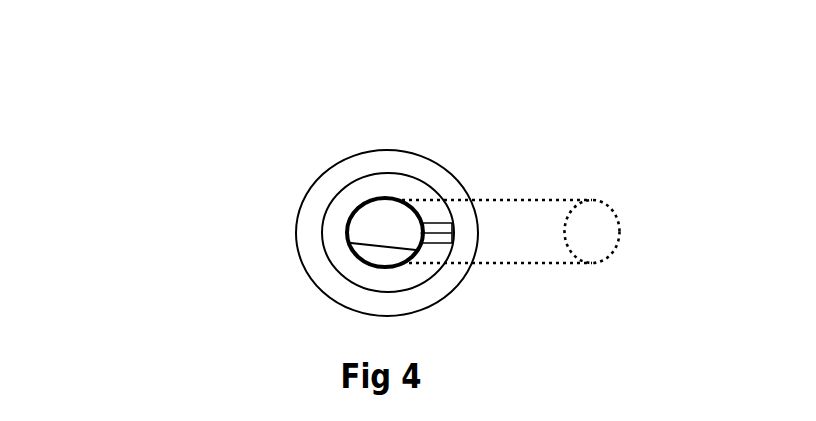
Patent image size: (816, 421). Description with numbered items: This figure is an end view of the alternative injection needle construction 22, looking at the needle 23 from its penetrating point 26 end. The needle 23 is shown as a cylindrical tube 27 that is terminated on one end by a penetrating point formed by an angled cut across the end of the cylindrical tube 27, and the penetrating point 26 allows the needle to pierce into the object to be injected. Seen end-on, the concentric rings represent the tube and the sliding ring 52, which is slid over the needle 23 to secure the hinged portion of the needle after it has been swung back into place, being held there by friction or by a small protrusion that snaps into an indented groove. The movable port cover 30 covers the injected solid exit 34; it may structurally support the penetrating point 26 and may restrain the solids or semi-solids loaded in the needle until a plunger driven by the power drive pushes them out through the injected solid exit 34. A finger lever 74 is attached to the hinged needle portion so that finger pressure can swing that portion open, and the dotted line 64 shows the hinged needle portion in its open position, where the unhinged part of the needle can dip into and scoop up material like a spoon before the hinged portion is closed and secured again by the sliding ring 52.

The alternative construction 22 is at (224, 324).
The needle 23 is at (351, 245).
The sliding ring 52 is at (353, 222).
The cylindrical tube 27 is at (351, 212).
The movable port cover 30 is at (385, 230).
The injected solid exit 34 is at (405, 227).
The finger lever 74 is at (453, 227).
The penetrating point 26 is at (450, 252).
The dotted line 64 is at (545, 248).